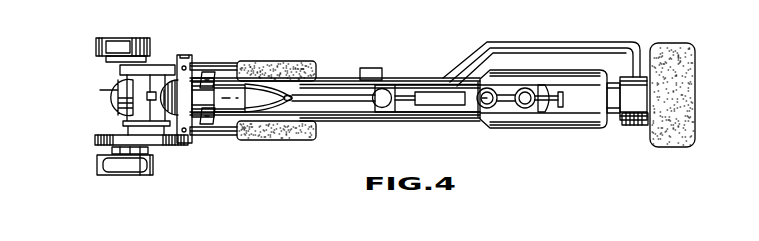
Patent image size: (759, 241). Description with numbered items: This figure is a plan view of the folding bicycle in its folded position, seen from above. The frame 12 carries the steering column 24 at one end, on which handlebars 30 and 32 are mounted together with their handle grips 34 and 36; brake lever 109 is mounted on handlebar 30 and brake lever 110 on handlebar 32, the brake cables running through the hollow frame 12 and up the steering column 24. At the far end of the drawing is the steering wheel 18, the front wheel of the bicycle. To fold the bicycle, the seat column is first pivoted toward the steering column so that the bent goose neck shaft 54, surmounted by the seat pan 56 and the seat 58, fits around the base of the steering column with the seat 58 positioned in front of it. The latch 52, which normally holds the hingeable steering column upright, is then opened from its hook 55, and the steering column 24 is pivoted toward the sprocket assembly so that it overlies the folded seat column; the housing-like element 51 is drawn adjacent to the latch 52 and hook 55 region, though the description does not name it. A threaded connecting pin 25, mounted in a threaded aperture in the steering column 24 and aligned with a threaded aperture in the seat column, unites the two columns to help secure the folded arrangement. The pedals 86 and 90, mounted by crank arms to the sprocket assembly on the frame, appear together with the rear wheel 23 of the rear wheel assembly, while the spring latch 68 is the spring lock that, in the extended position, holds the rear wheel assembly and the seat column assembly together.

The frame 12 is at (353, 80).
The steering wheel 18 is at (613, 114).
The rear wheel 23 is at (115, 97).
The steering column 24 is at (339, 92).
The threaded connecting pin 25 is at (393, 84).
The handlebar 30 is at (208, 65).
The handlebar 32 is at (228, 140).
The handle grip 34 is at (272, 60).
The handle grip 36 is at (280, 133).
The housing 51 is at (576, 125).
The latch 52 is at (453, 100).
The goose neck shaft 54 is at (580, 43).
The hook 55 is at (563, 97).
The seat pan 56 is at (637, 127).
The seat 58 is at (673, 47).
The spring latch 68 is at (152, 92).
The pedal 86 is at (133, 47).
The pedal 90 is at (143, 174).
The brake lever 109 is at (282, 104).
The brake lever 110 is at (267, 83).